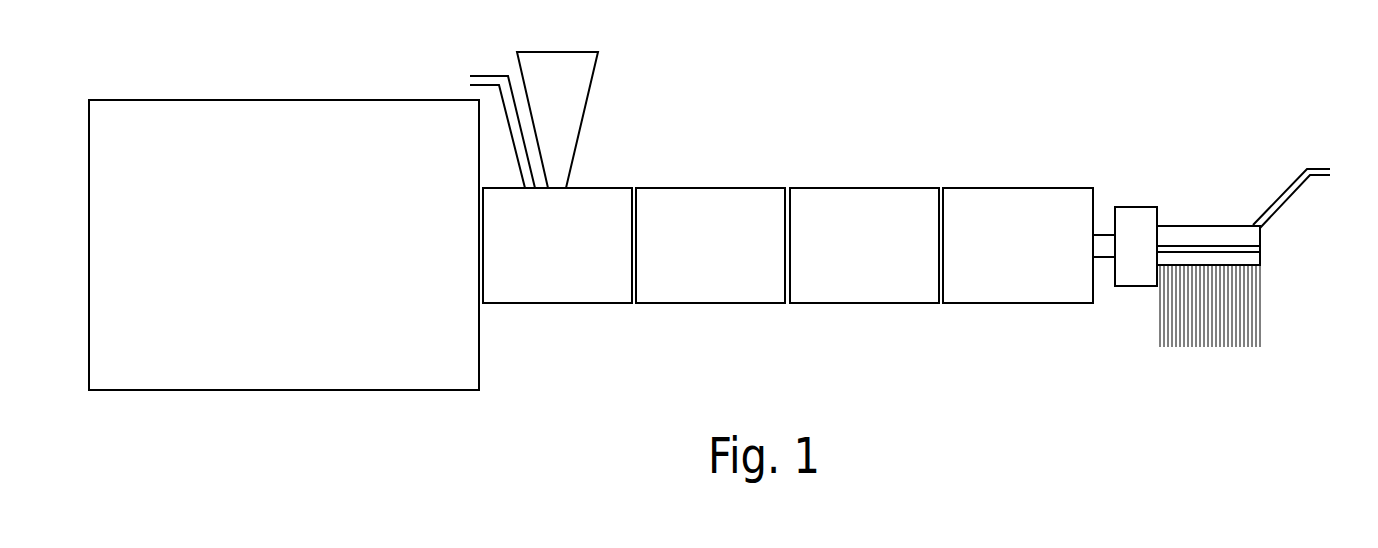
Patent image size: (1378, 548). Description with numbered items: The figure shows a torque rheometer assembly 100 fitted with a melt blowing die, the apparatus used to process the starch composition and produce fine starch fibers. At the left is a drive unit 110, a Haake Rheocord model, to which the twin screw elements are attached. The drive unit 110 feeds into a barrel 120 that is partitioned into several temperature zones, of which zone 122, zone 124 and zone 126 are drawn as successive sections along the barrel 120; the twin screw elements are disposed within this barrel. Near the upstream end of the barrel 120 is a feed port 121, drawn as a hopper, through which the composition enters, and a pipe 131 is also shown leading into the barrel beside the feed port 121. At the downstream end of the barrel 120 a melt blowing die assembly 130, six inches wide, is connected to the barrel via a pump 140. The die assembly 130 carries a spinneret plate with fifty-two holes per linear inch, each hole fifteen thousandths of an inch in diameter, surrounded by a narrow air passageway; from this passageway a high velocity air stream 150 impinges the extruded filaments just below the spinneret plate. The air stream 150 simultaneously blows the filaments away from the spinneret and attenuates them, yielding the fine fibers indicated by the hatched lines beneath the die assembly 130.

The torque rheometer assembly 100 is at (716, 107).
The drive unit 110 is at (292, 107).
The barrel 120 is at (611, 347).
The feed port 121 is at (571, 76).
The temperature zone 122 is at (670, 187).
The temperature zone 124 is at (808, 188).
The temperature zone 126 is at (952, 188).
The melt blowing die assembly 130 is at (1210, 216).
The feed pipe 131 is at (482, 75).
The pump 140 is at (1133, 212).
The high velocity air stream 150 is at (1323, 170).